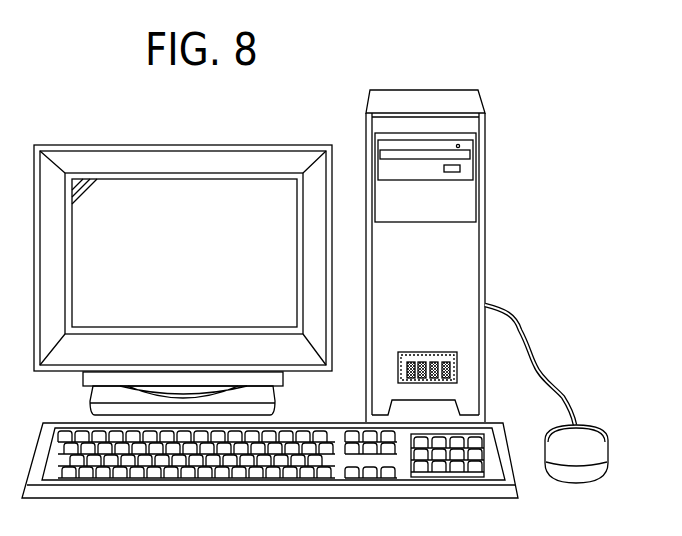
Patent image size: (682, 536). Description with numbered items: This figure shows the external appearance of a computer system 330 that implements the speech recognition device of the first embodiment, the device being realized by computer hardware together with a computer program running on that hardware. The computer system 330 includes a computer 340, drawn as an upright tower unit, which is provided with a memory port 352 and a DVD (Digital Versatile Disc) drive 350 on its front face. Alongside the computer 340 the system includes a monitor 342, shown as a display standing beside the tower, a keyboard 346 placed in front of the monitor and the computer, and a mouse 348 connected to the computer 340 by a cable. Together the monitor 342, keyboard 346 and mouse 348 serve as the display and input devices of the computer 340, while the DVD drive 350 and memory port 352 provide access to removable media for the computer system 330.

The computer system 330 is at (548, 57).
The computer 340 is at (470, 226).
The monitor 342 is at (311, 144).
The keyboard 346 is at (513, 445).
The mouse 348 is at (608, 436).
The DVD drive 350 is at (486, 152).
The memory port 352 is at (460, 373).